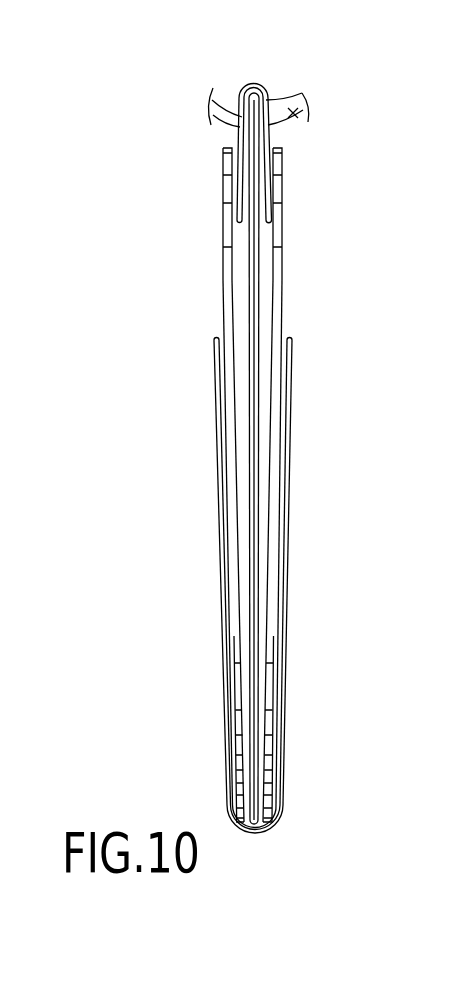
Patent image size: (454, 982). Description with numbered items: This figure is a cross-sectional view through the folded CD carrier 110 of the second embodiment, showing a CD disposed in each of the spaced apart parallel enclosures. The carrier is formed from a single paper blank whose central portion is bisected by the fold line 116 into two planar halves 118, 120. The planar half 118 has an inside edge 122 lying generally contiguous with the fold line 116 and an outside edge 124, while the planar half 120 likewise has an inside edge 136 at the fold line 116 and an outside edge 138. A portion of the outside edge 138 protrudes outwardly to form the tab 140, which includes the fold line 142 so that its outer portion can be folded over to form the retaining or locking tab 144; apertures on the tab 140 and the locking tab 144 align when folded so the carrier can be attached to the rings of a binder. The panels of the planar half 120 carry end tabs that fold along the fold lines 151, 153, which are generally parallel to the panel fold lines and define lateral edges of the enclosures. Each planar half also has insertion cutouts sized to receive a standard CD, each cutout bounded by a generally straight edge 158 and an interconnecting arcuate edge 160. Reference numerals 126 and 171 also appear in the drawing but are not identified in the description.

The CD carrier 110 is at (349, 480).
The fold line 116 is at (257, 833).
The planar half 118 is at (215, 463).
The planar half 120 is at (288, 443).
The inside edge 122 is at (228, 838).
The outside edge 124 is at (250, 88).
The inner wrap layer 126 is at (251, 118).
The inside edge 136 is at (275, 838).
The outside edge 138 is at (268, 95).
The tab 140 is at (230, 172).
The fold line 142 is at (257, 84).
The locking tab 144 is at (237, 135).
The fold line 151 is at (237, 636).
The fold line 153 is at (272, 633).
The straight edge 158 is at (237, 222).
The arcuate edge 160 is at (215, 337).
The wrap direction arrow 171 is at (293, 113).